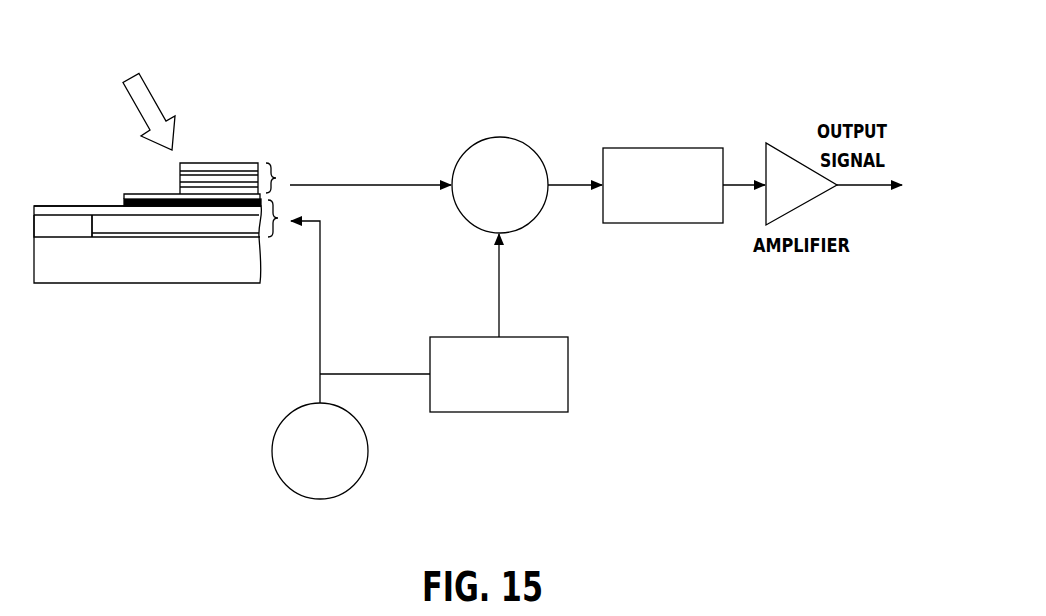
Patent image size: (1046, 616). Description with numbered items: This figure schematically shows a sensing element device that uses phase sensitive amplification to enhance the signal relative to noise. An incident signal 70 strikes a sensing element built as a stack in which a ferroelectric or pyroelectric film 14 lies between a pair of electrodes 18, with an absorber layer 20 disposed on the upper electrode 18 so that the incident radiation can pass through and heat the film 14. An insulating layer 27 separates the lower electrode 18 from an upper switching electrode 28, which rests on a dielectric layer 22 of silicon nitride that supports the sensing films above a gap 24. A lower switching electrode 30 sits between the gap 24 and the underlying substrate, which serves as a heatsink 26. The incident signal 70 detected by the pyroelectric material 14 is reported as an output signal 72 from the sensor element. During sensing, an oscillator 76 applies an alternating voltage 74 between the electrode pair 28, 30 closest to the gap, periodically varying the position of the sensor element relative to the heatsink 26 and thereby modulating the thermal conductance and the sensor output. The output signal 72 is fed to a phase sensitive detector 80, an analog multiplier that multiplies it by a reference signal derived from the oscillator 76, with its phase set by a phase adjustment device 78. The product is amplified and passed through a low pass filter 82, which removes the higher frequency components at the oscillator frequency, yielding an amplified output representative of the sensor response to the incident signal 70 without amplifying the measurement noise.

The ferroelectric material or film 14 is at (246, 182).
The electrodes 18 is at (222, 174).
The absorber layer 20 is at (190, 163).
The dielectric layer 22 is at (82, 213).
The gap 24 is at (112, 226).
The heatsink 26 is at (235, 265).
The insulating layer 27 is at (168, 198).
The upper switching electrode 28 is at (138, 194).
The lower switching electrode 30 is at (156, 235).
The incident signal 70 is at (138, 78).
The output signal 72 is at (370, 185).
The alternating voltage 74 is at (320, 283).
The oscillator 76 is at (368, 450).
The phase adjustment device 78 is at (568, 373).
The phase sensitive detector 80 is at (532, 218).
The low pass filter 82 is at (660, 148).